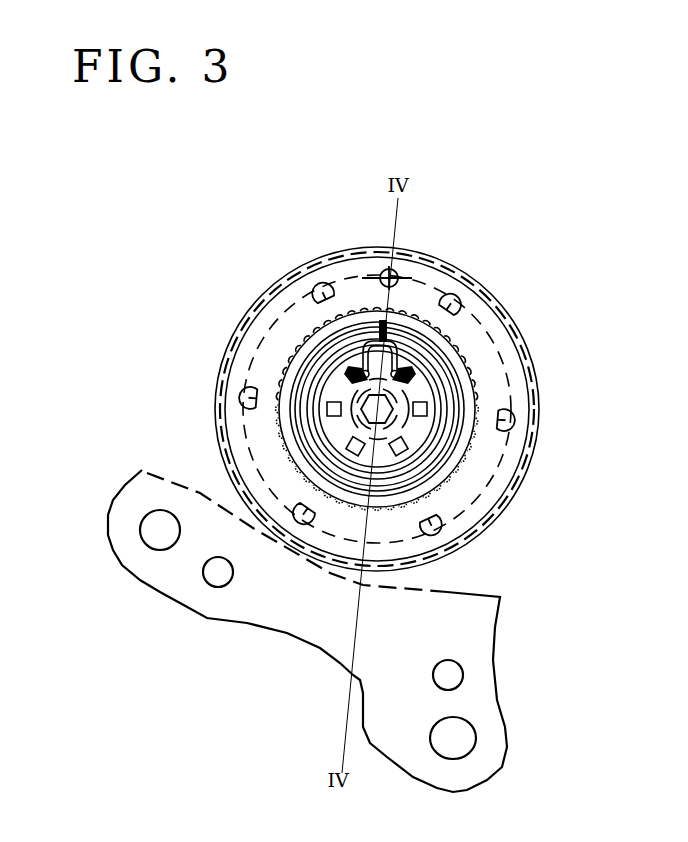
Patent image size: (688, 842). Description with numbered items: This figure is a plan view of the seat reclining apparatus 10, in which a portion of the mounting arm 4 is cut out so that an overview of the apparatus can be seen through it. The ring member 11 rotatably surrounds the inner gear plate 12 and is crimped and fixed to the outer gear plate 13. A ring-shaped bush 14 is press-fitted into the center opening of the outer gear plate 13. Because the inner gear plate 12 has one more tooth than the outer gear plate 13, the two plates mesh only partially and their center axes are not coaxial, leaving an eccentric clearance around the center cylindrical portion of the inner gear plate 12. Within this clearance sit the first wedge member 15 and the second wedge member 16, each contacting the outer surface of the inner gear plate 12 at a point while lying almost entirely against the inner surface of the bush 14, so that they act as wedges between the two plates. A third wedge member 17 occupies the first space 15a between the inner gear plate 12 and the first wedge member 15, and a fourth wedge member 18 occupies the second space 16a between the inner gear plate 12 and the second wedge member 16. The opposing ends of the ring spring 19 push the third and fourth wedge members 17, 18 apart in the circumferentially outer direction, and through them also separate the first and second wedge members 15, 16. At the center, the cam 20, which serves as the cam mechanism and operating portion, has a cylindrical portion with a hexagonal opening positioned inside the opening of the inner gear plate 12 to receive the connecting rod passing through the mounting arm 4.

The mounting arm 4 is at (493, 672).
The seat reclining apparatus 10 is at (236, 172).
The ring member 11 is at (500, 303).
The inner gear plate 12 is at (272, 347).
The outer gear plate 13 is at (302, 297).
The bush 14 is at (428, 372).
The first wedge member 15 is at (328, 405).
The first space 15a is at (302, 340).
The second wedge member 16 is at (470, 453).
The second space 16a is at (355, 368).
The third wedge member 17 is at (366, 366).
The fourth wedge member 18 is at (395, 366).
The ring spring 19 is at (400, 360).
The cam 20 is at (335, 450).